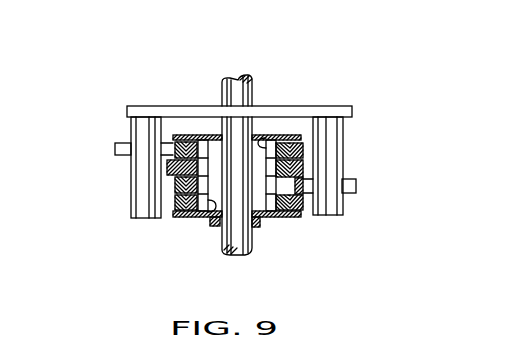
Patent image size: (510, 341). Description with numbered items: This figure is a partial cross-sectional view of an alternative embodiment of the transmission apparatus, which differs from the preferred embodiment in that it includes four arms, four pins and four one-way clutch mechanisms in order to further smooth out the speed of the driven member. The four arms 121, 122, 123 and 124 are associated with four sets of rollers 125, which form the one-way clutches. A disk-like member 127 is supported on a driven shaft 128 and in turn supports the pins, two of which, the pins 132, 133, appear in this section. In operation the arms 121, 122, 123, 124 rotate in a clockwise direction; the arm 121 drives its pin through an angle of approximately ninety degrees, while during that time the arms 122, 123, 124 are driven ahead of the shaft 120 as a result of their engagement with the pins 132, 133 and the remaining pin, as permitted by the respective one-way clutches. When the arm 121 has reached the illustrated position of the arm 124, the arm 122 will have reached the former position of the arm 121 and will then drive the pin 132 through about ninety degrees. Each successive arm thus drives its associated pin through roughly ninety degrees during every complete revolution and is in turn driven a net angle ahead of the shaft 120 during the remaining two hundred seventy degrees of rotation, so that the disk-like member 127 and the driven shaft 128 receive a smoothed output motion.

The shaft 120 is at (252, 244).
The arm 121 is at (175, 189).
The arm 122 is at (115, 149).
The arm 123 is at (303, 172).
The arm 124 is at (299, 216).
The rollers 125 is at (289, 113).
The disk-like member 127 is at (264, 135).
The driven shaft 128 is at (222, 92).
The pin 132 is at (137, 219).
The pin 133 is at (345, 204).